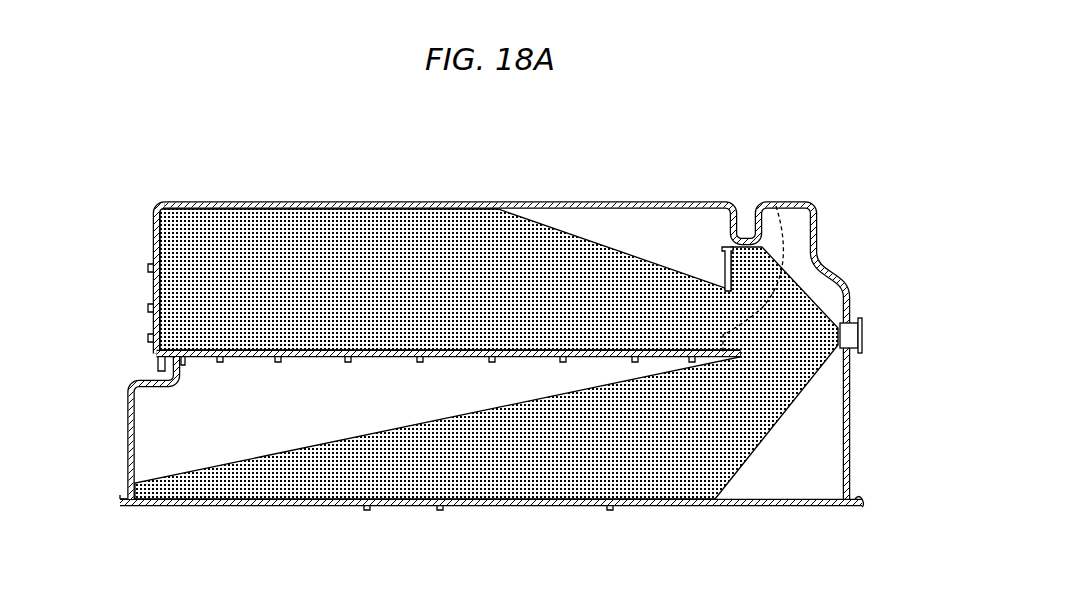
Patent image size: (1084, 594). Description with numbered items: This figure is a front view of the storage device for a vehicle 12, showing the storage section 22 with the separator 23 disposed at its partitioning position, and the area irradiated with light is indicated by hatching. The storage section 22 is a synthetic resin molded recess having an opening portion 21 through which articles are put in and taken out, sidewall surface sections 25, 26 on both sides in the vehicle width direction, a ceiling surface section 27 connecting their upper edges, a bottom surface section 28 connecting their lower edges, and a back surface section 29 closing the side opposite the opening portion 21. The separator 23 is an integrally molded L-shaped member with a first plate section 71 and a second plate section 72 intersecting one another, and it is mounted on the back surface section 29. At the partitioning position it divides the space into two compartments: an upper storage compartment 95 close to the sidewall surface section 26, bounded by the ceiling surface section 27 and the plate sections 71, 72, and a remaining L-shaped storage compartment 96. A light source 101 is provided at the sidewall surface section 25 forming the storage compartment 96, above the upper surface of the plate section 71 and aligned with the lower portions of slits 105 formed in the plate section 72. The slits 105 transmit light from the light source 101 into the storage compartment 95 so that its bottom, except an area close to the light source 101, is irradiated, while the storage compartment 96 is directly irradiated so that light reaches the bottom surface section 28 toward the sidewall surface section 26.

The storage device for a vehicle 12 is at (492, 342).
The opening portion 21 is at (812, 474).
The storage section 22 is at (791, 492).
The separator 23 is at (312, 370).
The sidewall surface section 25 is at (833, 411).
The sidewall surface section 26 is at (140, 418).
The ceiling surface section 27 is at (630, 220).
The bottom surface section 28 is at (606, 498).
The back surface section 29 is at (812, 402).
The first plate section 71 is at (247, 358).
The second plate section 72 is at (698, 242).
The storage compartment 95 is at (583, 230).
The storage compartment 96 is at (187, 433).
The light source 101 is at (826, 328).
The slits 105 is at (776, 206).